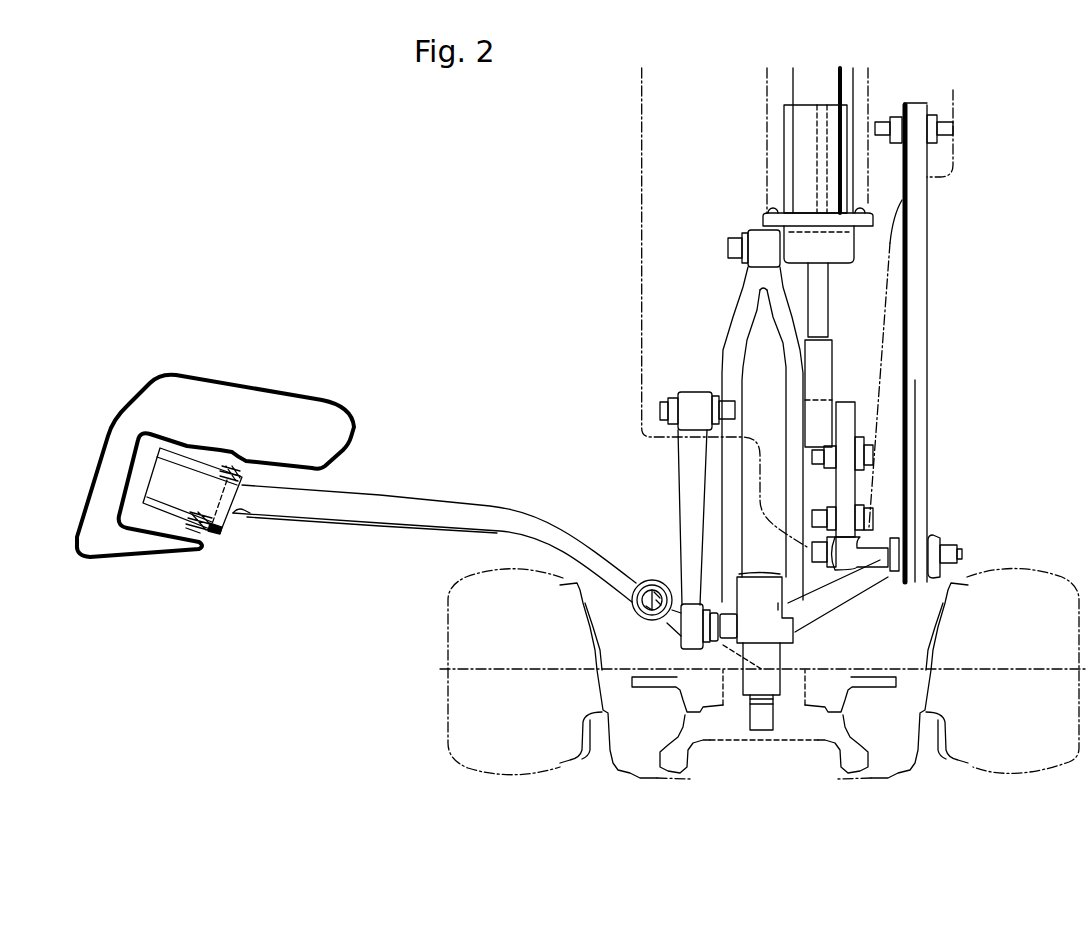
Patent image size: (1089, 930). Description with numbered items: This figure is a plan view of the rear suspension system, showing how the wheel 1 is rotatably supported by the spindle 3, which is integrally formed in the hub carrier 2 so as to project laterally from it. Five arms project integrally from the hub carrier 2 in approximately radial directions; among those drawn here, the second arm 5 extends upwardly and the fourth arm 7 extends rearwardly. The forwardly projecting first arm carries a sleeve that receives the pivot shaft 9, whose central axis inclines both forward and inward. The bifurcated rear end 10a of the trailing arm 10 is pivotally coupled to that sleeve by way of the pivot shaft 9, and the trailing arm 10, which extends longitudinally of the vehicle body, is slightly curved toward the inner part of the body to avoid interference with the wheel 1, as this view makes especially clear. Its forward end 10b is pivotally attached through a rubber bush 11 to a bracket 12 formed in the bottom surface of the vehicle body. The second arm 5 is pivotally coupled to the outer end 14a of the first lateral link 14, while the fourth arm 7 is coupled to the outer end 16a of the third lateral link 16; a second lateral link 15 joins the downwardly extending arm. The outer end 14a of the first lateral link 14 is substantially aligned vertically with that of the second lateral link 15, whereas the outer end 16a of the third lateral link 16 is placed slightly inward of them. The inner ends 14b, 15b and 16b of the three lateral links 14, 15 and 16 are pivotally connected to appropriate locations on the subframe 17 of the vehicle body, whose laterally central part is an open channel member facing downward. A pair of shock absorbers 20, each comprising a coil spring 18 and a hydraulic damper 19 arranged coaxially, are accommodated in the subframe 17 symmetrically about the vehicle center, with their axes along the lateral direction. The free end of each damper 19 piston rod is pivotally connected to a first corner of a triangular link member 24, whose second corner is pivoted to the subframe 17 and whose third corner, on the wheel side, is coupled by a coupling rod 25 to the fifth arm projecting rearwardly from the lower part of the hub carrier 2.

The wheel 1 is at (1033, 566).
The hub carrier 2 is at (795, 635).
The spindle 3 is at (782, 690).
The second arm 5 is at (728, 650).
The fourth arm 7 is at (847, 596).
The pivot shaft 9 is at (668, 627).
The trailing arm 10 is at (490, 505).
The bifurcated rear end 10a is at (660, 580).
The forward end 10b is at (244, 511).
The rubber bush 11 is at (218, 536).
The bracket 12 is at (152, 556).
The first lateral link 14 is at (682, 492).
The outer end of first lateral link 14a is at (684, 650).
The inner end of first lateral link 14b is at (688, 393).
The second lateral link 15 is at (722, 382).
The inner end of second lateral link 15b is at (755, 231).
The third lateral link 16 is at (929, 370).
The outer end of third lateral link 16a is at (918, 580).
The inner end of third lateral link 16b is at (910, 107).
The subframe 17 is at (640, 212).
The coil spring 18 is at (766, 118).
The hydraulic damper 19 is at (790, 77).
The shock absorber 20 is at (776, 146).
The triangular link member 24 is at (858, 453).
The coupling rod 25 is at (862, 539).